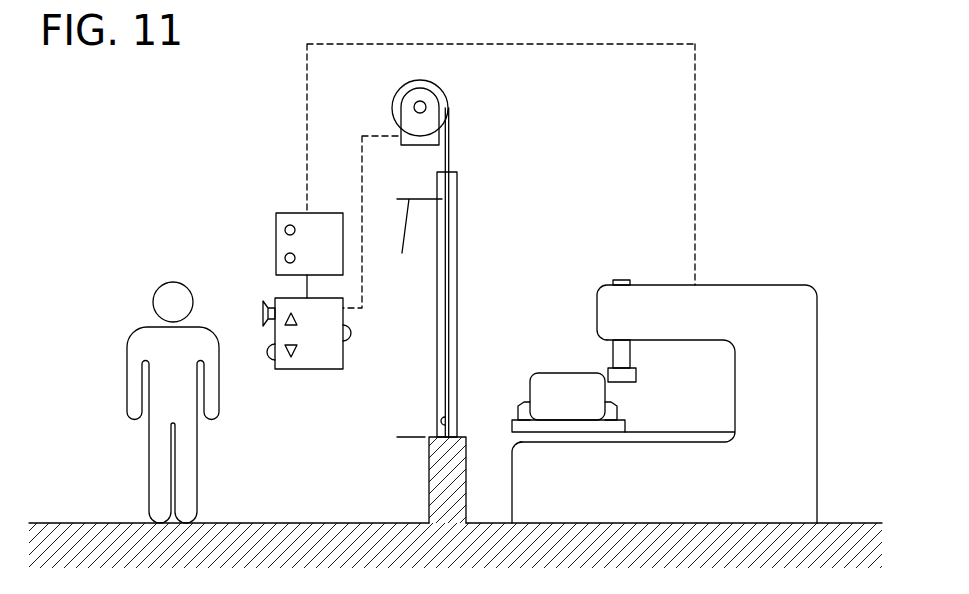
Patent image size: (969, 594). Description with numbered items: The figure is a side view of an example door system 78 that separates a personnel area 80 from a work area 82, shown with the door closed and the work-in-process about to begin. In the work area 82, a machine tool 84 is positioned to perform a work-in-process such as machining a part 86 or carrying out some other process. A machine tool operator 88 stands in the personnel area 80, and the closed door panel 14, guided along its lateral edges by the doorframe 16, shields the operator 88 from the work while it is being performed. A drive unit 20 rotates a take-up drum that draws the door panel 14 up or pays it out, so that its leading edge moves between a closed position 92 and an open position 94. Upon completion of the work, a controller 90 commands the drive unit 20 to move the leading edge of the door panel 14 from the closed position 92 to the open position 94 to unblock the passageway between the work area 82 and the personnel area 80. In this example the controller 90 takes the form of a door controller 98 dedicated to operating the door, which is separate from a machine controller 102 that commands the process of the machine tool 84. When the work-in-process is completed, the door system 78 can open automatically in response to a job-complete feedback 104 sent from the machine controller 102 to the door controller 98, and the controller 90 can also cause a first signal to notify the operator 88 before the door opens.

The door system 78 is at (141, 164).
The drive unit 20 is at (420, 148).
The door panel 14 is at (447, 232).
The doorframe 16 is at (457, 314).
The open position 94 is at (415, 241).
The work area 82 is at (521, 351).
The machine tool 84 is at (741, 285).
The part 86 is at (558, 373).
The machine tool operator 88 is at (162, 287).
The closed position 92 is at (410, 437).
The controller 90 is at (321, 390).
The personnel area 80 is at (308, 477).
The door controller 98 is at (305, 371).
The machine controller 102 is at (276, 237).
The job-complete feedback 104 is at (307, 287).